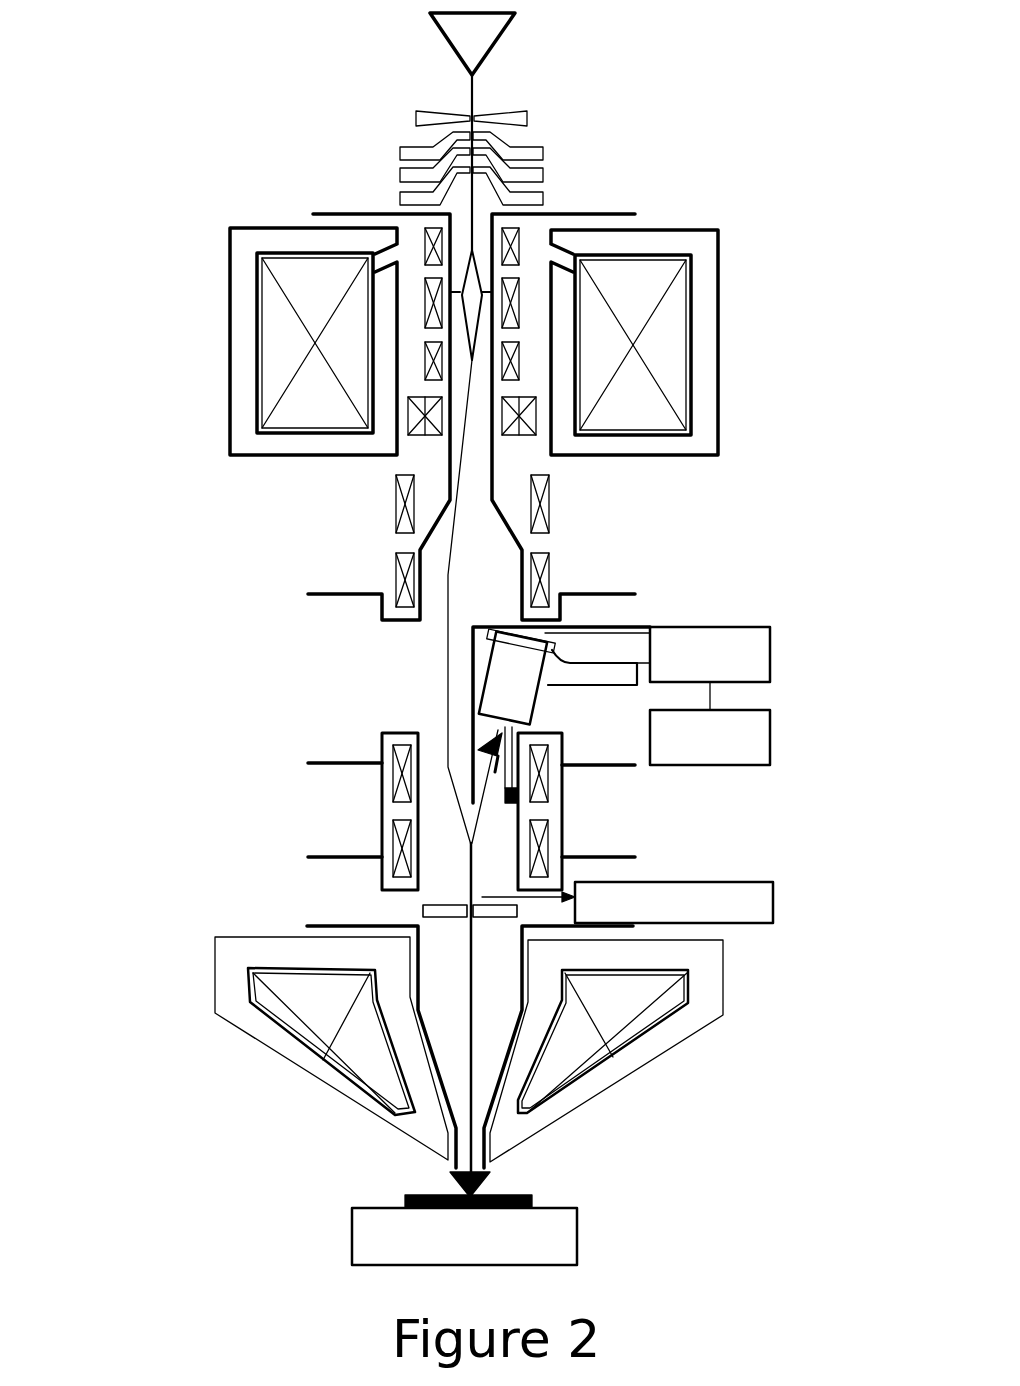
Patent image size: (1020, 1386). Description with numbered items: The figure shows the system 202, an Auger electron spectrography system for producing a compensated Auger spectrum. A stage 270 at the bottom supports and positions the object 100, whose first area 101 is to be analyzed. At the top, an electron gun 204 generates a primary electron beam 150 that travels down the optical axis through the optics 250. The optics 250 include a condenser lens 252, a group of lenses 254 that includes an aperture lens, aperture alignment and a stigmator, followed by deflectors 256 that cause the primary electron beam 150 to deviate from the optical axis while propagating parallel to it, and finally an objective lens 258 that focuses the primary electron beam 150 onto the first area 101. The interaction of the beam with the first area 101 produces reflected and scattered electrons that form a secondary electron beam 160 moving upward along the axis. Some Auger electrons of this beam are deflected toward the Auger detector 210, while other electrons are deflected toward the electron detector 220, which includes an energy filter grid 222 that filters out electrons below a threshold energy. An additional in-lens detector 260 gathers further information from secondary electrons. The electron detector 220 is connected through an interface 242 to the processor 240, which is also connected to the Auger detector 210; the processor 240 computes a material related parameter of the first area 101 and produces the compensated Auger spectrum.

The electron gun 204 is at (490, 43).
The condenser lens 252 is at (504, 93).
The group of lenses 254 is at (555, 166).
The optics 250 is at (190, 956).
The deflectors 256 is at (355, 538).
The primary electron beam 150 is at (447, 648).
The electron detector 220 is at (561, 715).
The energy filter grid 222 is at (570, 638).
The interface 242 is at (710, 668).
The processor 240 is at (710, 737).
The secondary electron beam 160 is at (480, 810).
The in-lens detector 260 is at (423, 912).
The Auger detector 210 is at (627, 902).
The objective lens 258 is at (287, 1060).
The object 100 is at (427, 1197).
The first area 101 is at (477, 1192).
The stage 270 is at (464, 1236).
The system 202 is at (265, 1130).